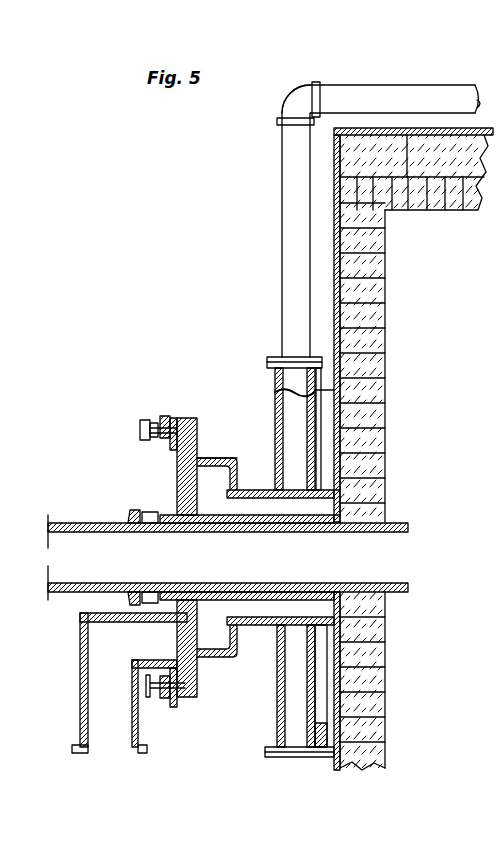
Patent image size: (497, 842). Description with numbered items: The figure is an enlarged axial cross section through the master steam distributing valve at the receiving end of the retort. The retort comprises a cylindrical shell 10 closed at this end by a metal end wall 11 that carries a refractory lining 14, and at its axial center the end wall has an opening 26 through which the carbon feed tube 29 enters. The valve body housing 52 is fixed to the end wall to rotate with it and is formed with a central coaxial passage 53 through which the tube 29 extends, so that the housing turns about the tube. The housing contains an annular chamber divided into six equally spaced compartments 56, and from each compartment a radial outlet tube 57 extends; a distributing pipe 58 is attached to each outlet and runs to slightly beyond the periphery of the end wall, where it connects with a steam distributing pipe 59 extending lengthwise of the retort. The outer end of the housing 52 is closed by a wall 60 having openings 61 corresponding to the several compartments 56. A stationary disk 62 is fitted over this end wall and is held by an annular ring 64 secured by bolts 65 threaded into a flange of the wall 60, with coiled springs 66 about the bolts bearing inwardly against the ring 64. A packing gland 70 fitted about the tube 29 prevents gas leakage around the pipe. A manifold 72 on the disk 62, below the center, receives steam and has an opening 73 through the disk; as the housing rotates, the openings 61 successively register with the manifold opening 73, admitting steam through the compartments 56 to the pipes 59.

The cylindrical shell 10 is at (437, 128).
The end wall 11 is at (340, 263).
The refractory lining 14 is at (373, 243).
The opening 26 is at (358, 525).
The outer metal tube 29 is at (380, 534).
The valve body housing 52 is at (220, 455).
The central coaxial passage 53 is at (345, 495).
The compartments 56 is at (230, 468).
The radial outlet tube 57 is at (285, 377).
The distributing pipes 58 is at (288, 192).
The steam distributing pipes 59 is at (388, 90).
The housing end wall 60 is at (177, 495).
The openings 61 is at (177, 478).
The stationary plate or disk 62 is at (177, 455).
The annular ring 64 is at (168, 418).
The bolts 65 is at (140, 428).
The coiled springs 66 is at (155, 418).
The packing gland 70 is at (130, 603).
The manifold 72 is at (153, 657).
The manifold opening 73 is at (185, 633).